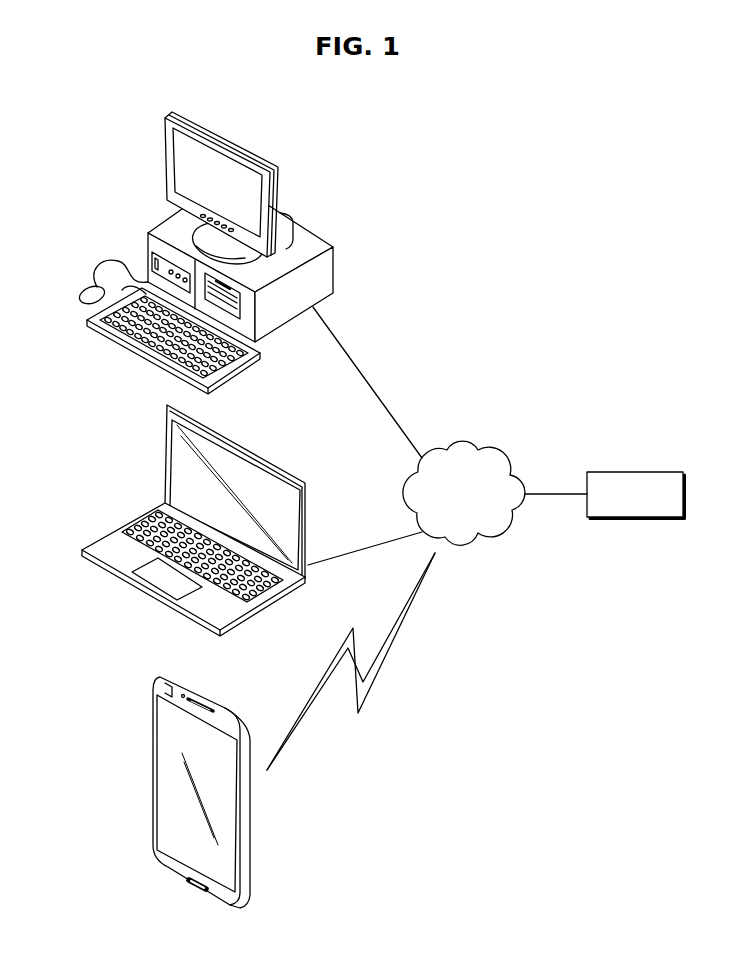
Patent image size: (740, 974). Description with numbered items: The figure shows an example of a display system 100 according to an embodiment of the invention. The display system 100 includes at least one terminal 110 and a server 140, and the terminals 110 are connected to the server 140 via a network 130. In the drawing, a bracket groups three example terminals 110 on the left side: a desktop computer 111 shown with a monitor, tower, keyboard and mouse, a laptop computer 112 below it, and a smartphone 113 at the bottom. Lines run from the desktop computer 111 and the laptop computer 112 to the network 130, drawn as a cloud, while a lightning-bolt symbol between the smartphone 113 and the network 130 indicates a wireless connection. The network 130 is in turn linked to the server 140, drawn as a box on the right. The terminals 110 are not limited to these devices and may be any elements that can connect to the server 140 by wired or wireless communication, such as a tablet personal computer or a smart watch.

The display system 100 is at (445, 108).
The terminal 110 is at (74, 909).
The desktop computer 111 is at (170, 153).
The laptop computer 112 is at (170, 460).
The smartphone 113 is at (152, 702).
The network 130 is at (470, 442).
The server 140 is at (627, 472).